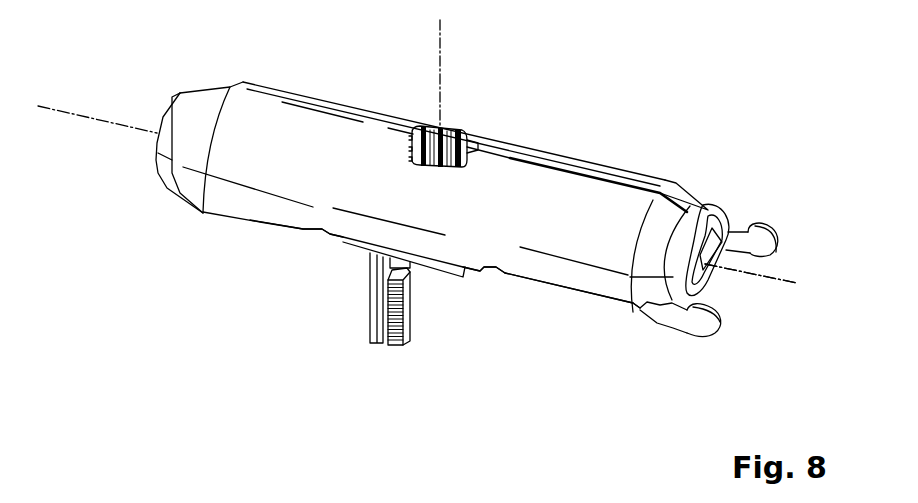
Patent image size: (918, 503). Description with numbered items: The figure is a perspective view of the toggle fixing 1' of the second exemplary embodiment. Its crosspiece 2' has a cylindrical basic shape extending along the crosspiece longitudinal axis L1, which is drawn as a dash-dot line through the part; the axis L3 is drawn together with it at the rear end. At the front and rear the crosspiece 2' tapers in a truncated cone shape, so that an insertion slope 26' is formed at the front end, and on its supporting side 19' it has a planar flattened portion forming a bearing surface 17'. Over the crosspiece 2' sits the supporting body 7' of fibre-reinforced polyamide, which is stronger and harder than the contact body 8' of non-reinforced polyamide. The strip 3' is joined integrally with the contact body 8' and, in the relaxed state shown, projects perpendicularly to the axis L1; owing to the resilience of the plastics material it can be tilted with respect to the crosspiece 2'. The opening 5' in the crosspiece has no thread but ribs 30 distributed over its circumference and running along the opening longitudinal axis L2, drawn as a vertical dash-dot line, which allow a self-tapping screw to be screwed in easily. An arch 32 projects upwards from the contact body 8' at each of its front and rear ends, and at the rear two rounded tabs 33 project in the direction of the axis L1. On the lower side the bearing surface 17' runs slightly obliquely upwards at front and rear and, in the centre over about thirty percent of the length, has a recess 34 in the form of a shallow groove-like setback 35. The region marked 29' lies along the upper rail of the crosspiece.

The toggle fixing 1' is at (440, 192).
The crosspiece 2' is at (475, 131).
The strip 3' is at (361, 300).
The opening 5' is at (454, 108).
The supporting body 7' is at (396, 93).
The contact body 8' is at (296, 262).
The bearing surface 17' is at (569, 317).
The supporting side 19' is at (633, 349).
The insertion slope 26' is at (230, 114).
The rail reinforcement 29' is at (598, 157).
The ribs 30 is at (470, 147).
The arch 32 is at (178, 97).
The rounded tabs 33 is at (703, 337).
The recess 34 is at (483, 283).
The groove-like setback 35 is at (470, 276).
The crosspiece longitudinal axis L1 is at (768, 281).
The opening longitudinal axis L2 is at (437, 30).
The longitudinal axis L3 is at (751, 273).